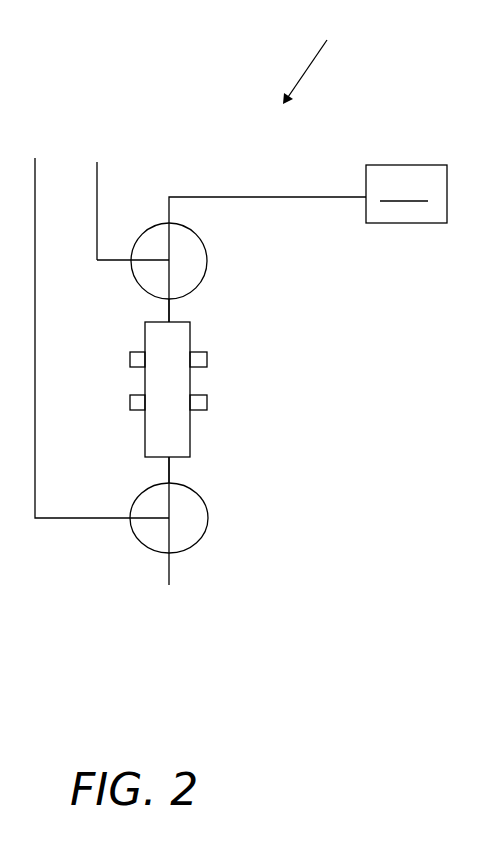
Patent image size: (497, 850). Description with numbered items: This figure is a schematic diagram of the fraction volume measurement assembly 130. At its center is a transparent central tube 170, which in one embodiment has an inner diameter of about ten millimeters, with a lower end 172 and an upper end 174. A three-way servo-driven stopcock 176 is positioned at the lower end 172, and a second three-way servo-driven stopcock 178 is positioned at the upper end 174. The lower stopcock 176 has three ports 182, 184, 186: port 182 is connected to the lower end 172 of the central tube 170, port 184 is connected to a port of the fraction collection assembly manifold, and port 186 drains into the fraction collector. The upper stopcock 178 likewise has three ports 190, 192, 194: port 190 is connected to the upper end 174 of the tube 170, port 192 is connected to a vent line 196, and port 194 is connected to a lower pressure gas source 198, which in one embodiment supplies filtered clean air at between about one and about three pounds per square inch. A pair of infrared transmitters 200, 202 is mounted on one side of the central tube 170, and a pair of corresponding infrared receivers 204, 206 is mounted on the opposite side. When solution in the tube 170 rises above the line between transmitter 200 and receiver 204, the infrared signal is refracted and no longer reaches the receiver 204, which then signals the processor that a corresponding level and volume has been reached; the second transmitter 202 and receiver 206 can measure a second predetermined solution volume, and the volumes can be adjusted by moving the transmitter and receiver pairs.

The fraction volume measurement assembly 130 is at (324, 53).
The transparent central tube 170 is at (190, 433).
The lower end 172 is at (180, 462).
The upper end 174 is at (175, 318).
The 3-way servo-driven stopcock 176 is at (209, 520).
The 3-way servo-driven stopcock 178 is at (208, 258).
The port 182 is at (173, 483).
The port 184 is at (130, 521).
The port 186 is at (170, 553).
The port 190 is at (155, 298).
The port 192 is at (132, 258).
The port 194 is at (174, 222).
The vent line 196 is at (97, 192).
The lower pressure gas source 198 is at (406, 194).
The infrared transmitter 200 is at (207, 398).
The infrared transmitter 202 is at (207, 358).
The infrared receiver 204 is at (130, 402).
The infrared receiver 206 is at (130, 358).